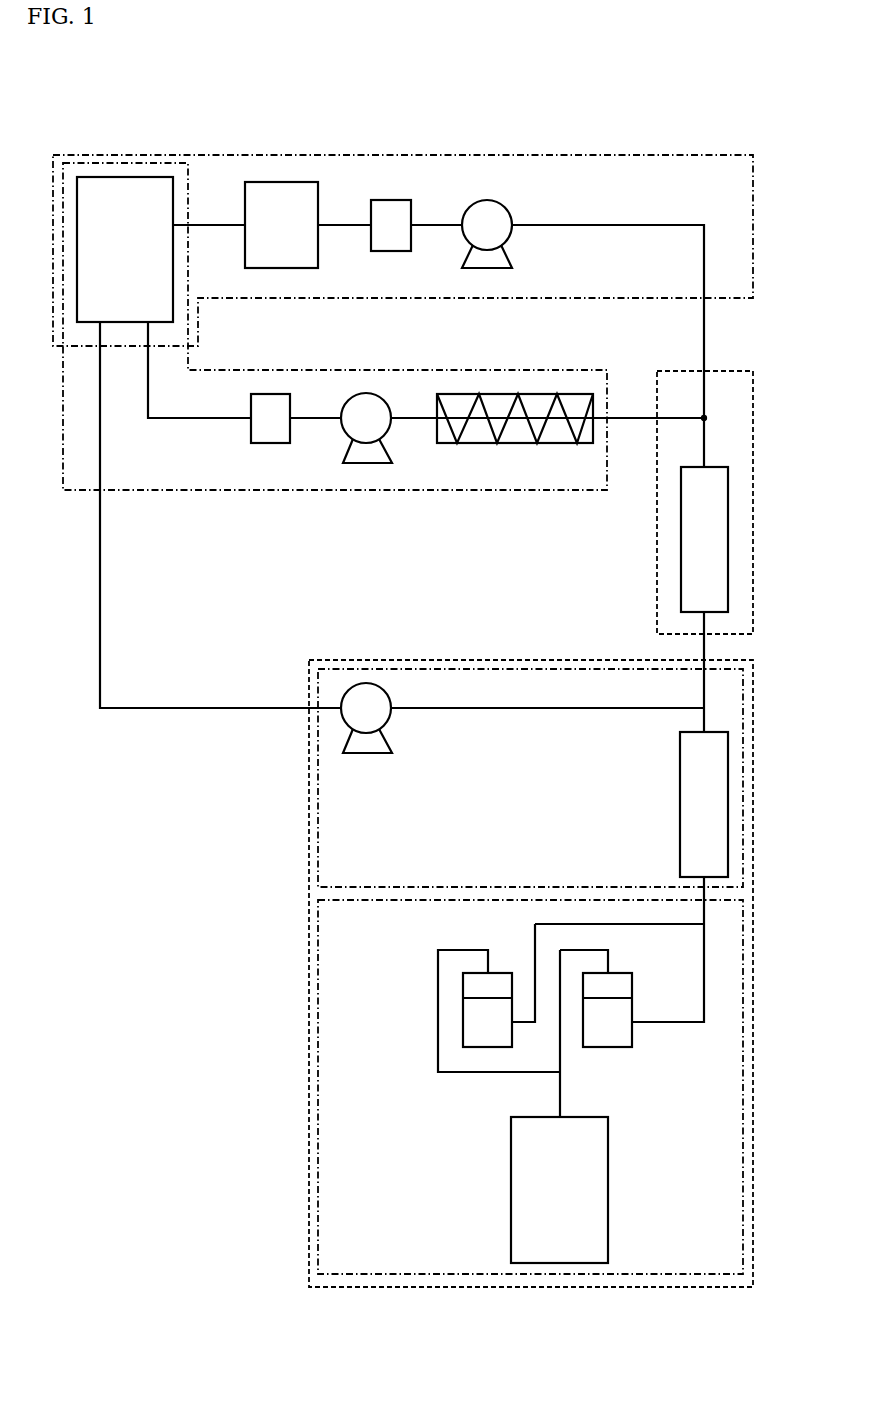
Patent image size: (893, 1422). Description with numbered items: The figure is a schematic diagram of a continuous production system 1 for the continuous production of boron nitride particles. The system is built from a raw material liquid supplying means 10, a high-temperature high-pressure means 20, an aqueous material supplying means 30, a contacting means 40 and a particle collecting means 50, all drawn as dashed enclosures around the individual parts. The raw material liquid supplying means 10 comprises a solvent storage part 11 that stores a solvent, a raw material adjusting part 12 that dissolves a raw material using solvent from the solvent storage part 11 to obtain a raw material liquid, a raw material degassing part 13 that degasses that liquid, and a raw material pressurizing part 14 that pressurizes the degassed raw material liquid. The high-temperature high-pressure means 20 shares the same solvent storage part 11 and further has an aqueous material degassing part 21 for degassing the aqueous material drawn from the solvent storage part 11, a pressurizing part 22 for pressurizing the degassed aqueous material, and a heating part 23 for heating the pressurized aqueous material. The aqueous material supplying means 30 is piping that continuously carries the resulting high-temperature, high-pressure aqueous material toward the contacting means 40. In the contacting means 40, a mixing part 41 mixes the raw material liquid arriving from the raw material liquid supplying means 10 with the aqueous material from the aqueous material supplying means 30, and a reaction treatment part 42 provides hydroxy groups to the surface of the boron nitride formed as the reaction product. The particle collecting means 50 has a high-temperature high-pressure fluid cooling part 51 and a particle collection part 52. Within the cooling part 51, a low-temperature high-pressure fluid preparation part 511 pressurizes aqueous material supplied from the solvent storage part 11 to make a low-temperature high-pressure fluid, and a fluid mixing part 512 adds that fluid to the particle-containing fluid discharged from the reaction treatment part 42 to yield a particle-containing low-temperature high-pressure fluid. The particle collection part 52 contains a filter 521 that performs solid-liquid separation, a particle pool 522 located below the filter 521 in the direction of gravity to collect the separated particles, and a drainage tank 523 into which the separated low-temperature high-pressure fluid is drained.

The continuous production system 1 is at (755, 120).
The raw material liquid supplying means 10 is at (655, 155).
The solvent storage part 11 is at (149, 177).
The raw material adjusting part 12 is at (300, 182).
The raw material degassing part 13 is at (393, 200).
The raw material pressurizing part 14 is at (487, 200).
The high-temperature high-pressure means 20 is at (587, 370).
The aqueous material degassing part 21 is at (270, 394).
The pressurizing part 22 is at (366, 394).
The heating part 23 is at (515, 394).
The aqueous material supplying means 30 is at (632, 418).
The contacting means 40 is at (730, 371).
The mixing part 41 is at (708, 418).
The reaction treatment part 42 is at (728, 480).
The particle collecting means 50 is at (755, 665).
The high-temperature high-pressure fluid cooling part 51 is at (585, 660).
The low-temperature high-pressure fluid preparation part 511 is at (366, 683).
The fluid mixing part 512 is at (728, 795).
The particle collection part 52 is at (745, 962).
The filter 521 is at (608, 998).
The particle pool 522 is at (618, 1050).
The drainage tank 523 is at (609, 1160).